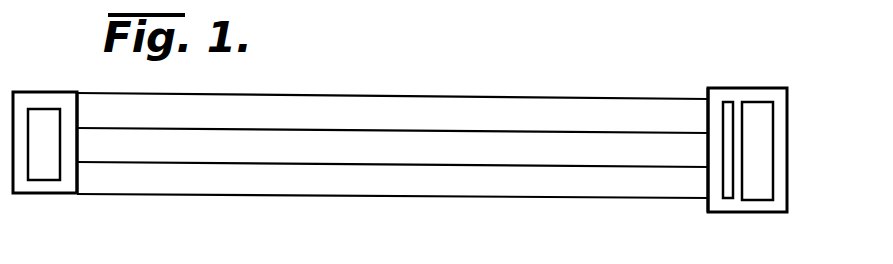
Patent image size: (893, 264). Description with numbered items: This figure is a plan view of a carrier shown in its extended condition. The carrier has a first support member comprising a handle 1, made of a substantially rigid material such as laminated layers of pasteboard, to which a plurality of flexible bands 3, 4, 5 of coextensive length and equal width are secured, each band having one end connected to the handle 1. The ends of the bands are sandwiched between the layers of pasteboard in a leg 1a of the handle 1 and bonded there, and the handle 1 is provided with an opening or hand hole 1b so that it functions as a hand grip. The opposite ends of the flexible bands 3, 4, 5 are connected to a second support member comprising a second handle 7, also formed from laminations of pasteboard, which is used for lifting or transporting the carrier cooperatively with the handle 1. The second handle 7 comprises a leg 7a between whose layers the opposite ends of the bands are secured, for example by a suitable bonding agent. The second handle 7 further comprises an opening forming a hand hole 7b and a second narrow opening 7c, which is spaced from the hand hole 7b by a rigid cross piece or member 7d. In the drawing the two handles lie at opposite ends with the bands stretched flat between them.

The handle 1 is at (27, 98).
The leg 1a is at (67, 168).
The hand hole 1b is at (50, 182).
The flexible band 3 is at (237, 188).
The flexible band 4 is at (298, 138).
The flexible band 5 is at (355, 103).
The second handle 7 is at (723, 96).
The leg 7a is at (715, 158).
The hand hole 7b is at (757, 201).
The narrow opening 7c is at (723, 202).
The cross piece 7d is at (737, 173).